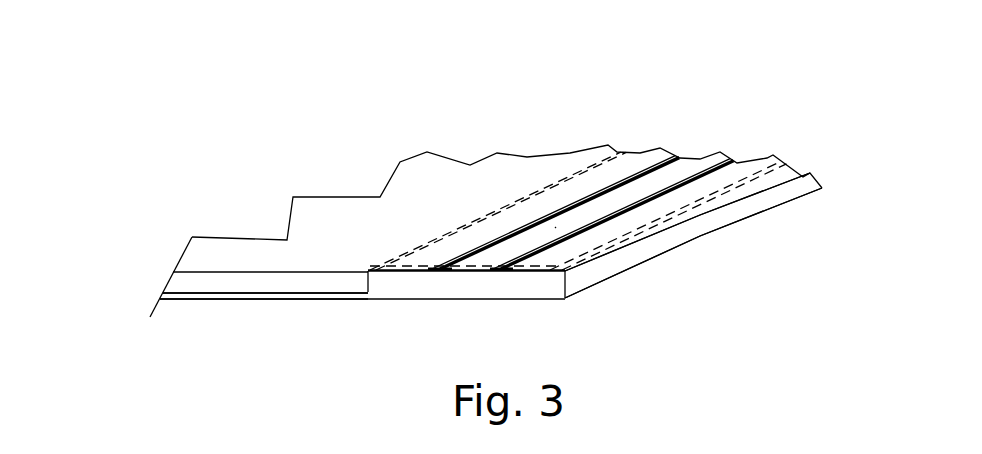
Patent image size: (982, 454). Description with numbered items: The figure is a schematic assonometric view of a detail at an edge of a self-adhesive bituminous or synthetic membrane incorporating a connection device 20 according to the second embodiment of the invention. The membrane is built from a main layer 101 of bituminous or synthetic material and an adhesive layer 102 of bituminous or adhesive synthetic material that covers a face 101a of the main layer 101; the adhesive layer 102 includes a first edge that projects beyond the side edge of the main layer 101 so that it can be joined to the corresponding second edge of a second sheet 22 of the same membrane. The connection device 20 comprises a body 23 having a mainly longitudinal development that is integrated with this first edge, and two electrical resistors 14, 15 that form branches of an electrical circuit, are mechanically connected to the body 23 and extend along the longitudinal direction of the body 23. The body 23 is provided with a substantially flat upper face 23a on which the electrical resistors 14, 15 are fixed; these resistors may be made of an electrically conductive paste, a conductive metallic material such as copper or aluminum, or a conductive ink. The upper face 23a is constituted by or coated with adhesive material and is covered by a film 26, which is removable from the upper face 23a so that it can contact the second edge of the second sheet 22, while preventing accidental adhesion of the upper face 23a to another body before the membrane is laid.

The electrical resistor 14 is at (643, 170).
The electrical resistor 15 is at (702, 172).
The connection device 20 is at (427, 318).
The second sheet 22 is at (648, 283).
The body 23 is at (545, 294).
The upper face 23a is at (555, 227).
The film 26 is at (417, 243).
The main layer 101 is at (188, 283).
The face of the main layer 101a is at (277, 292).
The adhesive layer 102 is at (225, 293).